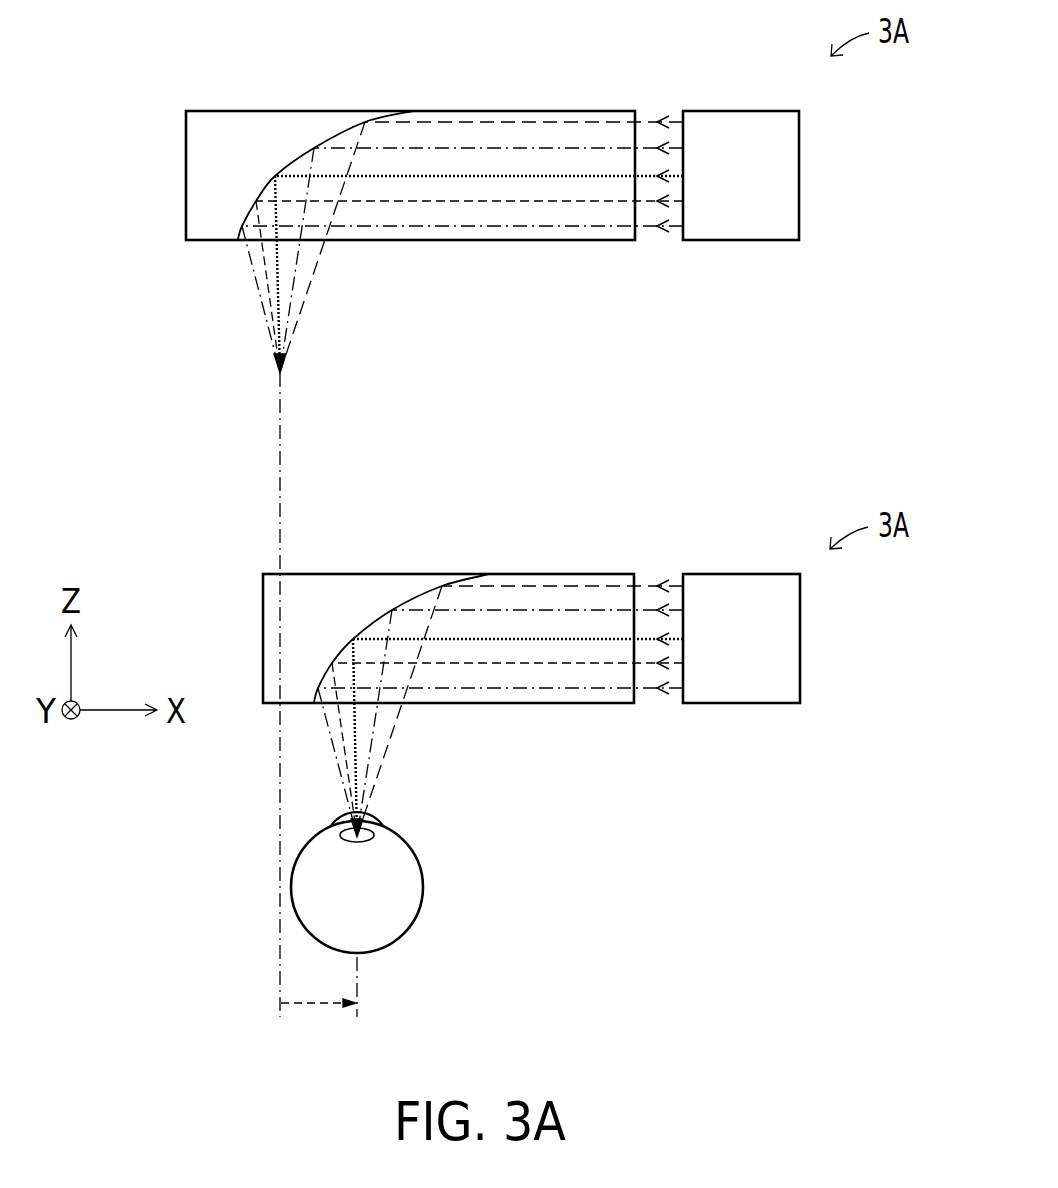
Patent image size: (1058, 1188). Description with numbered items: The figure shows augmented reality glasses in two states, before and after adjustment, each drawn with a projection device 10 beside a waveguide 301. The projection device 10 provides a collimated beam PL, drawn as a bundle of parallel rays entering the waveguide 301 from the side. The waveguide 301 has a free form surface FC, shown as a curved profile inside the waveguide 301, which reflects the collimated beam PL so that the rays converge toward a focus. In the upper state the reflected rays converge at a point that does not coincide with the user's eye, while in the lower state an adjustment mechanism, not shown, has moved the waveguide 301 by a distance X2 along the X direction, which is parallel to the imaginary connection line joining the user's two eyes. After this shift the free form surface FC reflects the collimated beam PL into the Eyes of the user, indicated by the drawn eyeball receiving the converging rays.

The waveguide 301 is at (520, 111).
The projection device 10 is at (771, 111).
The free form surface FC is at (332, 137).
The collimated beam PL is at (643, 120).
The eyes of the user Eyes is at (415, 891).
The distance X2 is at (318, 695).